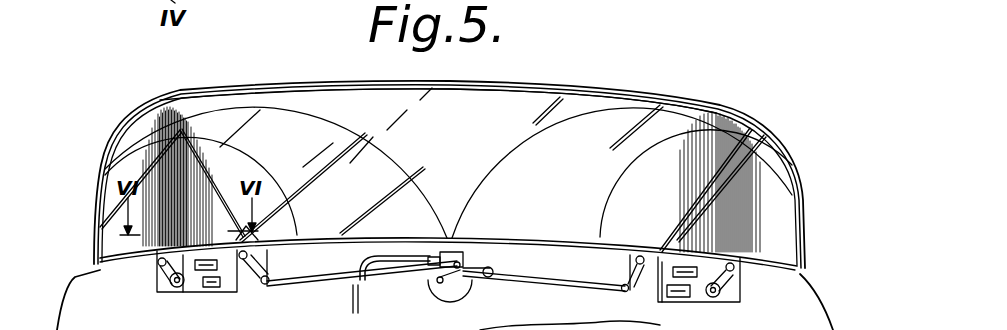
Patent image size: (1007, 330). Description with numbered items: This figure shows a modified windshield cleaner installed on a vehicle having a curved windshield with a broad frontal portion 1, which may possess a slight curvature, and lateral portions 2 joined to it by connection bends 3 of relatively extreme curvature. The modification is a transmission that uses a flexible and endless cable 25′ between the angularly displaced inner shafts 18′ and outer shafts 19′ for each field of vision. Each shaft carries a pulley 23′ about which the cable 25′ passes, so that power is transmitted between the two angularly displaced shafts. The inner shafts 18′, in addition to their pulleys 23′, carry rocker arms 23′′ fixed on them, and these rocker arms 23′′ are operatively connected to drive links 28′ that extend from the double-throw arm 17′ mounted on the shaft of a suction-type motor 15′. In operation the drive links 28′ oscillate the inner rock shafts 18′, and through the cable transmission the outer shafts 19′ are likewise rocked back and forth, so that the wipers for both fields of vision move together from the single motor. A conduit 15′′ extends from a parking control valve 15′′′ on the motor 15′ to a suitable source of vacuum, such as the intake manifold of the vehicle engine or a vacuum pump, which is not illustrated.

The broad frontal portion 1 is at (438, 141).
The lateral portions 2 is at (127, 152).
The connection bends 3 is at (186, 101).
The motor 15′ is at (432, 283).
The conduit 15′′ is at (233, 225).
The parking control valve 15′′′ is at (458, 254).
The double-throw arm 17′ is at (467, 288).
The inner shafts 18′ is at (268, 259).
The outer shafts 19′ is at (158, 275).
The pulley 23′ is at (636, 285).
The rocker arms 23′′ is at (259, 283).
The flexible and endless cable 25′ is at (188, 288).
The drive links 28′ is at (337, 280).